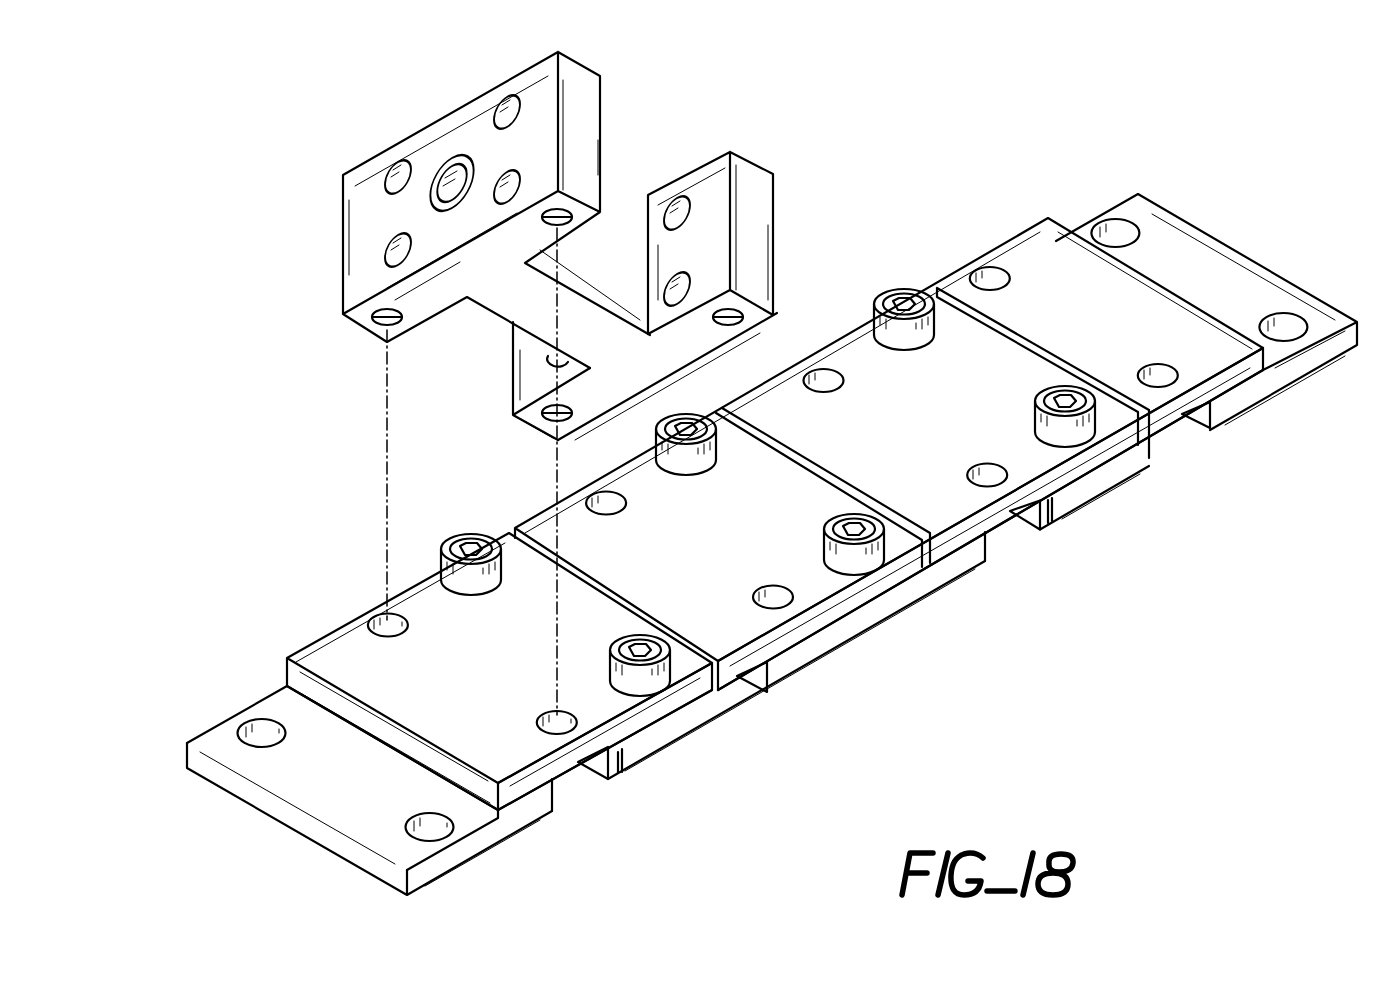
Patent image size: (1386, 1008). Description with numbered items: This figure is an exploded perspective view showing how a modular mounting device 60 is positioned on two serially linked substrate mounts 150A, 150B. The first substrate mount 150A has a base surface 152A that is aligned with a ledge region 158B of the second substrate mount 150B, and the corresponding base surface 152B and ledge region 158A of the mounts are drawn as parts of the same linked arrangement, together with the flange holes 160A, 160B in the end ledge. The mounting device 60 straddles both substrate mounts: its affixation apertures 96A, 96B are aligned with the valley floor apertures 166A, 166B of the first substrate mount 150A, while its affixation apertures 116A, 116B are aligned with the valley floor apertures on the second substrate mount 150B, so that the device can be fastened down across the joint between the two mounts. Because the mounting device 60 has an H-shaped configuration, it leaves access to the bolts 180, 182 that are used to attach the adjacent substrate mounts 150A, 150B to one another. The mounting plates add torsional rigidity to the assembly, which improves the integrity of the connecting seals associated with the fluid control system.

The modular mounting device 60 is at (784, 137).
The affixation aperture 96A is at (366, 328).
The affixation aperture 96B is at (603, 212).
The affixation aperture 116A is at (530, 427).
The affixation aperture 116B is at (775, 305).
The first substrate mount 150A is at (500, 693).
The second substrate mount 150B is at (768, 542).
The base surface 152A is at (665, 705).
The front edge of second mounting plate 152B is at (885, 590).
The first base flange 158A is at (325, 790).
The ledge region 158B is at (718, 703).
The first flange mounting hole 160A is at (258, 728).
The second flange mounting hole 160B is at (430, 822).
The valley floor aperture 166A is at (385, 617).
The valley floor aperture 166B is at (562, 730).
The bolt 180 is at (476, 546).
The bolt 182 is at (648, 648).